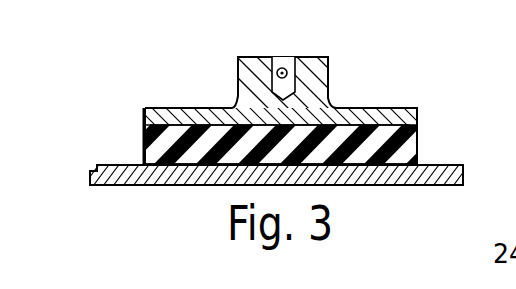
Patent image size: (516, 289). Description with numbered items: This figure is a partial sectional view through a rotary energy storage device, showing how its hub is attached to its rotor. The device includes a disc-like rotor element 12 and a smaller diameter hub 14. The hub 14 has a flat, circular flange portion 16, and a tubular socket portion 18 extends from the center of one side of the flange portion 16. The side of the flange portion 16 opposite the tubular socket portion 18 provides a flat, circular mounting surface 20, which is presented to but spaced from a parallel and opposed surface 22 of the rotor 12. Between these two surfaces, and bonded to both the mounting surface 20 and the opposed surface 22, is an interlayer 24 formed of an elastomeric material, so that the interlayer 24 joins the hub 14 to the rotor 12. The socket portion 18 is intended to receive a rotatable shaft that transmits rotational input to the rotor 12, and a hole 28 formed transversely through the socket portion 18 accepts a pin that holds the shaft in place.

The rotor element 12 is at (444, 167).
The hub 14 is at (171, 105).
The flange portion 16 is at (373, 118).
The tubular socket portion 18 is at (328, 60).
The mounting surface 20 is at (207, 128).
The opposed surface 22 is at (388, 166).
The interlayer 24 is at (143, 146).
The hole 28 is at (283, 66).